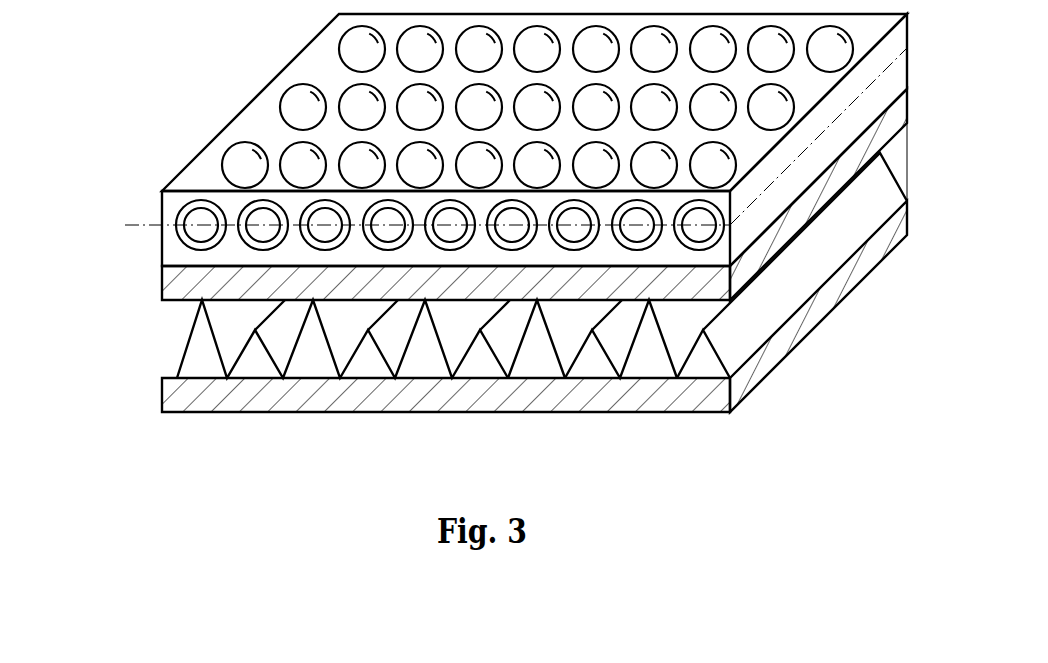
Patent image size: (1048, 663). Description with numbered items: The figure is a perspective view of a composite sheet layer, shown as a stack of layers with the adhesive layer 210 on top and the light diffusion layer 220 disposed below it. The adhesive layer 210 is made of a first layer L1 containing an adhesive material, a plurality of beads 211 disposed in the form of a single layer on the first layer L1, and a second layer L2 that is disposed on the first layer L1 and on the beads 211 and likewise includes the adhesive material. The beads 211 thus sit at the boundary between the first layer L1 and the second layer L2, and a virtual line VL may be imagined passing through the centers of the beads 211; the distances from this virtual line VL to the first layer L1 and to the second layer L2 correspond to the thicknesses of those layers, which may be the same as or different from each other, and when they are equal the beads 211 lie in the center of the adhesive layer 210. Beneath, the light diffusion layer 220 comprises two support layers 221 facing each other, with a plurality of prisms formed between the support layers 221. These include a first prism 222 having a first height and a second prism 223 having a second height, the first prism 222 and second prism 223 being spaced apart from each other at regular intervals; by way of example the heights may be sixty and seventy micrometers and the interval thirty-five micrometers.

The adhesive layer 210 is at (533, 140).
The beads 211 is at (238, 160).
The light diffusion layer 220 is at (536, 281).
The support layers 221 is at (481, 313).
The first prism 222 is at (702, 362).
The second prism 223 is at (537, 362).
The first layer L1 is at (175, 254).
The second layer L2 is at (173, 208).
The virtual line VL is at (410, 225).